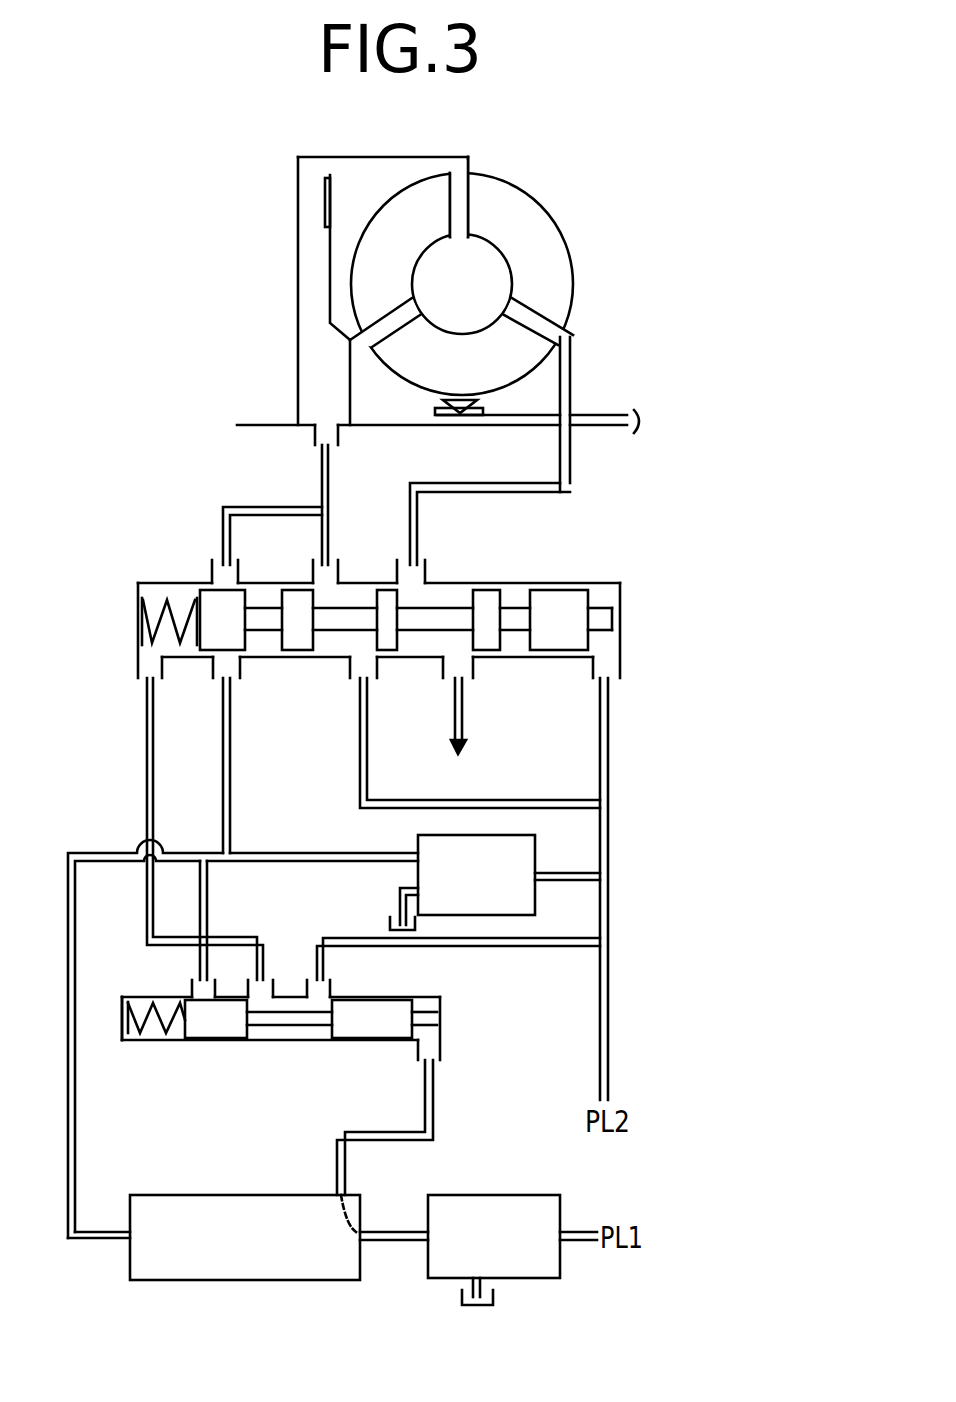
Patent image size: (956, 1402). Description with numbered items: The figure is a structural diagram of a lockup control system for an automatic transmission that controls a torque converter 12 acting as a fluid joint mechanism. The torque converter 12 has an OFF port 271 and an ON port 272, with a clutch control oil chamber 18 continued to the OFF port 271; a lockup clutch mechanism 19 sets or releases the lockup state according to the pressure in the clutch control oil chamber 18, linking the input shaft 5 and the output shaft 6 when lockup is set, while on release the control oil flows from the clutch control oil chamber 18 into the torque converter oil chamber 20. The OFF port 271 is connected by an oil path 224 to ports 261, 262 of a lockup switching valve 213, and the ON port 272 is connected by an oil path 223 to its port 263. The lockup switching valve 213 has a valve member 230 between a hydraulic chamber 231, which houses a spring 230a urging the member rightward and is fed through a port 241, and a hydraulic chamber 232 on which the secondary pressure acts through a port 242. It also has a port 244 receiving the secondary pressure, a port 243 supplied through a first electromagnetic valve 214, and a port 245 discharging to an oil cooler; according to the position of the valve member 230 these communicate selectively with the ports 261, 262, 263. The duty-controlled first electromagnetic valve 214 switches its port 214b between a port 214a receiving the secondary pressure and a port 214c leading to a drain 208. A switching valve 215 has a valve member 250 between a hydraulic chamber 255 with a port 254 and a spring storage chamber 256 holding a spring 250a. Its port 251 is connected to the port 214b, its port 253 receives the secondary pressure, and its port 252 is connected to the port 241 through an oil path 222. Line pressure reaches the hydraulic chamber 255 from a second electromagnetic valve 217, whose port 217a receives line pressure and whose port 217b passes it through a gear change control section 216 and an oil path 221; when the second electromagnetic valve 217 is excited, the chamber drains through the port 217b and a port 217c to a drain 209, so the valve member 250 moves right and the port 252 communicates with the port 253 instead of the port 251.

The torque converter oil chamber 20 is at (372, 177).
The torque converter 12 is at (490, 177).
The lockup clutch mechanism 19 is at (325, 203).
The clutch control oil chamber 18 is at (322, 252).
The input shaft 5 is at (260, 425).
The output shaft 6 is at (640, 420).
The oil path 224 is at (330, 467).
The OFF port 271 is at (323, 445).
The ON port 272 is at (570, 443).
The oil path 223 is at (527, 483).
The valve member 230 is at (577, 597).
The spring 230a is at (148, 620).
The hydraulic chamber 231 is at (178, 587).
The lockup switching valve 213 is at (520, 583).
The hydraulic chamber 232 is at (610, 600).
The port 261 is at (242, 567).
The port 262 is at (377, 548).
The port 263 is at (460, 548).
The port 241 is at (138, 667).
The port 242 is at (622, 668).
The port 243 is at (240, 667).
The port 244 is at (378, 668).
The port 245 is at (475, 668).
The oil path 222 is at (147, 735).
The first electromagnetic valve 214 is at (536, 846).
The port 214a is at (535, 880).
The port 214b is at (418, 852).
The port 214c is at (415, 892).
The drain 208 is at (390, 925).
The valve member 250 is at (345, 1030).
The spring 250a is at (138, 1033).
The spring storage chamber 256 is at (163, 1033).
The switching valve 215 is at (132, 997).
The port 251 is at (192, 983).
The port 252 is at (277, 983).
The port 253 is at (330, 987).
The port 254 is at (417, 1055).
The hydraulic chamber 255 is at (425, 1002).
The oil path 221 is at (433, 1088).
The gear change control section 216 is at (272, 1197).
The second electromagnetic valve 217 is at (477, 1195).
The port 217a is at (562, 1232).
The port 217b is at (427, 1232).
The port 217c is at (493, 1282).
The drain 209 is at (465, 1298).